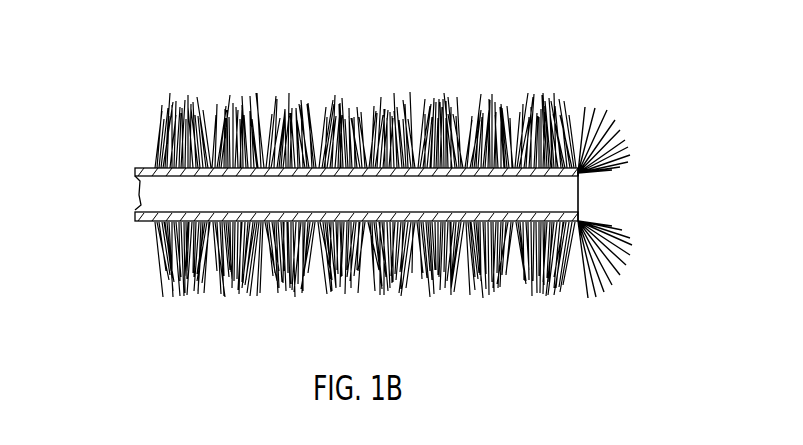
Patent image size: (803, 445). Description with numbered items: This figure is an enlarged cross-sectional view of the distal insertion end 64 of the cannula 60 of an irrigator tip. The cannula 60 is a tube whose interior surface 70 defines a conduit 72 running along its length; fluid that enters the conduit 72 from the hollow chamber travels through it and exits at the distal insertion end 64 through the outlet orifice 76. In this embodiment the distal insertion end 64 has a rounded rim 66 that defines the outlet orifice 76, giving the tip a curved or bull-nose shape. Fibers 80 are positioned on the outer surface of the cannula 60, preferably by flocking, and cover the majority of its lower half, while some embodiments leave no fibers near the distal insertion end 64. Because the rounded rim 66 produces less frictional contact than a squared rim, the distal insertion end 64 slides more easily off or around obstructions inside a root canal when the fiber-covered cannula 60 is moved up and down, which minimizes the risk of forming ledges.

The cannula 60 is at (152, 225).
The distal insertion end 64 is at (572, 105).
The rounded rim 66 is at (604, 173).
The interior surface 70 is at (138, 183).
The conduit 72 is at (293, 206).
The outlet orifice 76 is at (570, 198).
The fibers 80 is at (336, 104).